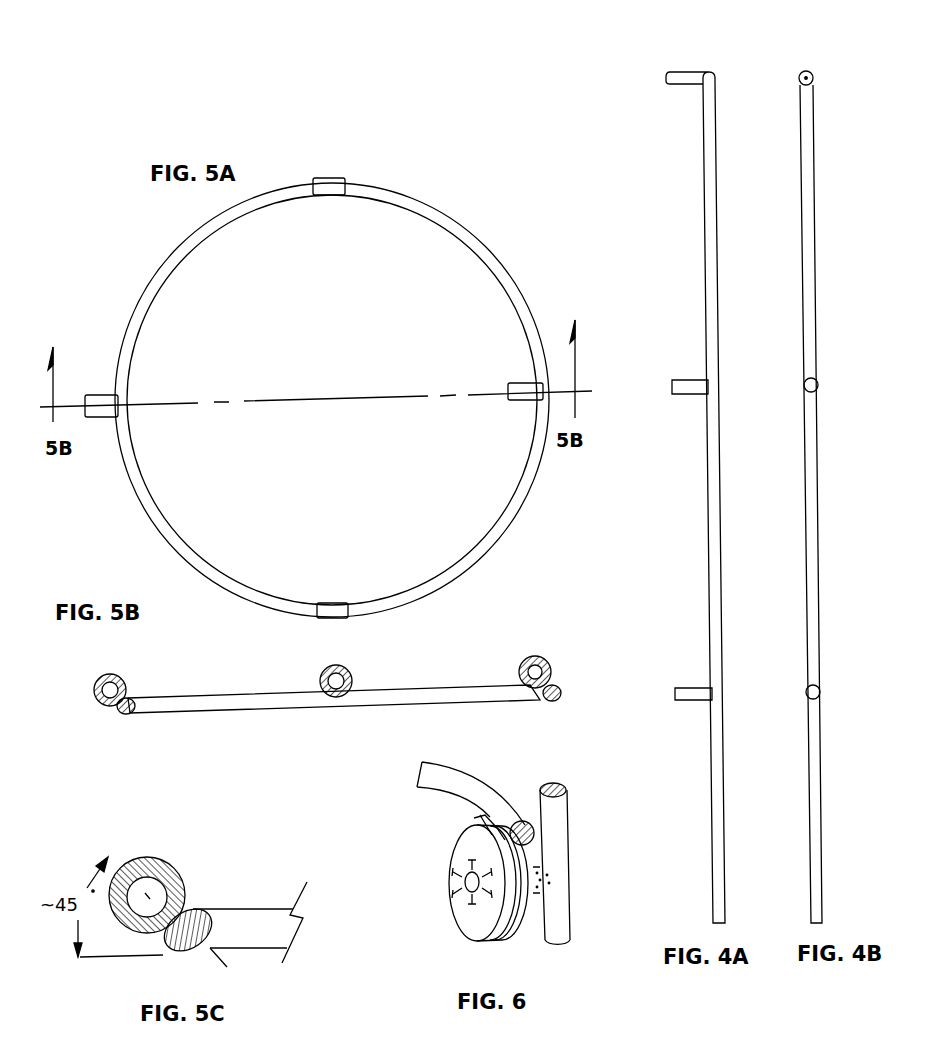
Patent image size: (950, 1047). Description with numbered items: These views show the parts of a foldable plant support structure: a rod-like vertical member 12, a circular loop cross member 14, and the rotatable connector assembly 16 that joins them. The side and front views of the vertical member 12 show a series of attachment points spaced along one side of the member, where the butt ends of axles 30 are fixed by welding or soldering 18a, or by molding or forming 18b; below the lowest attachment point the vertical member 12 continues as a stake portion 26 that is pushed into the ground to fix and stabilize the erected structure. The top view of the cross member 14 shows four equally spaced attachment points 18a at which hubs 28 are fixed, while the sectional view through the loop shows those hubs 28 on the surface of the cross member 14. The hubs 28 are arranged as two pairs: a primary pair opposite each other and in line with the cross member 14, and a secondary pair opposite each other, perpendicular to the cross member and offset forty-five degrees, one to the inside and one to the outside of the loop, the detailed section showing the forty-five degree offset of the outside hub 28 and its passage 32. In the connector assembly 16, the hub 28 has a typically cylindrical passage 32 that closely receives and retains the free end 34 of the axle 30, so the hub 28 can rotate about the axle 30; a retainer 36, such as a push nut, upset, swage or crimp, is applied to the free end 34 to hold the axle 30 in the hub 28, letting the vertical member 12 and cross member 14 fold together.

In FIG. 6, the vertical member 12 is at (557, 810).
In FIG. 4A, the vertical member 12 is at (708, 507).
In FIG. 4B, the vertical member 12 is at (807, 198).
In FIG. 5A, the cross member 14 is at (232, 213).
In FIG. 5B, the cross member 14 is at (227, 703).
In FIG. 5C, the cross member 14 is at (250, 922).
In FIG. 6, the cross member 14 is at (437, 783).
In FIG. 6, the connector assembly 16 is at (443, 843).
In FIG. 5B, the welding or soldering attachment point 18a is at (127, 697).
In FIG. 5C, the welding or soldering attachment point 18a is at (187, 903).
In FIG. 6, the welding or soldering attachment point 18a is at (497, 823).
In FIG. 4A, the welding or soldering attachment point 18a is at (717, 380).
In FIG. 4B, the welding or soldering attachment point 18a is at (812, 538).
In FIG. 4A, the forming attachment point 18b is at (700, 88).
In FIG. 4A, the stake portion 26 is at (720, 852).
In FIG. 4B, the stake portion 26 is at (813, 858).
In FIG. 5A, the hub 28 is at (329, 188).
In FIG. 6, the hub 28 is at (515, 927).
In FIG. 6, the axle 30 is at (540, 873).
In FIG. 4A, the axle 30 is at (675, 72).
In FIG. 4B, the axle 30 is at (800, 76).
In FIG. 5C, the passage 32 is at (185, 883).
In FIG. 6, the free end of the axle 34 is at (465, 888).
In FIG. 6, the retainer 36 is at (457, 852).